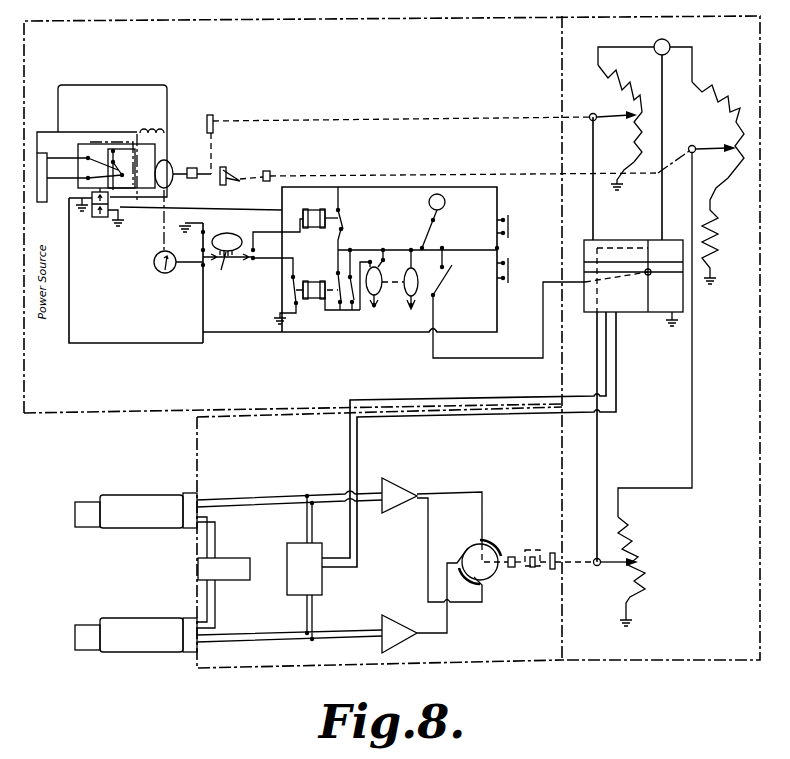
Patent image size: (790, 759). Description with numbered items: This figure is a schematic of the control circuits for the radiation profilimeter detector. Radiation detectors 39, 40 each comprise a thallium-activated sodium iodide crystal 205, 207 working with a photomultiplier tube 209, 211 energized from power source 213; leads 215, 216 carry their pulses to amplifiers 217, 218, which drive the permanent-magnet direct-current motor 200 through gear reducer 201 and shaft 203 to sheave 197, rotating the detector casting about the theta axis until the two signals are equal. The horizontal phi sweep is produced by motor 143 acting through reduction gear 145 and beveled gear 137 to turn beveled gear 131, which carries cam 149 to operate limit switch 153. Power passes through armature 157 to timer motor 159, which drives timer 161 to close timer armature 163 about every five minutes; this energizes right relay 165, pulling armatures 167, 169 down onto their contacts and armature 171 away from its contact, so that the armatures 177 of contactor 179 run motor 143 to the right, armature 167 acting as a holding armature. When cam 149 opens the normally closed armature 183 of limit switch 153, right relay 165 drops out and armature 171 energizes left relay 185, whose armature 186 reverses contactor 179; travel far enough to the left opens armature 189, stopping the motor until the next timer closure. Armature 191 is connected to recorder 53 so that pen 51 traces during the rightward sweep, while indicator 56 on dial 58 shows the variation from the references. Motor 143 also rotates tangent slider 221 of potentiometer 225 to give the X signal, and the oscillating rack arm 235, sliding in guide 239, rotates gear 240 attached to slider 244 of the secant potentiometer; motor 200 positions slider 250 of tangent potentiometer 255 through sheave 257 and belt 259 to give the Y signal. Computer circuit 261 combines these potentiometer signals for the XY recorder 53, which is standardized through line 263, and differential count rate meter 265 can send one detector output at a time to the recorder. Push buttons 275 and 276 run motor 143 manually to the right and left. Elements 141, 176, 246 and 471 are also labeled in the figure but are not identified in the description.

The radiation detector 39 is at (123, 486).
The radiation detector 40 is at (123, 613).
The pen 51 is at (647, 276).
The recorder 53 is at (656, 329).
The indicator 56 is at (154, 268).
The dial 58 is at (162, 273).
The beveled gear 131 is at (224, 186).
The beveled gear 137 is at (222, 168).
The transformer 141 is at (228, 233).
The motor 143 is at (171, 170).
The reduction gear 145 is at (190, 179).
The cam 149 is at (254, 262).
The limit switch 153 is at (204, 266).
The armature 157 is at (428, 228).
The timer motor 159 is at (380, 290).
The timer 161 is at (374, 297).
The timer armature 163 is at (410, 249).
The right relay 165 is at (304, 281).
The right relay armature 167 is at (337, 276).
The right relay armature 169 is at (350, 270).
The armature 171 is at (289, 283).
The rectifier 176 is at (92, 215).
The contactor armatures 177 is at (110, 150).
The contactor 179 is at (137, 150).
The normally-closed armature 183 is at (203, 258).
The left relay 185 is at (320, 209).
The left relay armature 186 is at (341, 210).
The armature 189 is at (257, 250).
The armature 191 is at (438, 300).
The sheave 197 is at (532, 567).
The motor 200 is at (486, 544).
The gear reducer 201 is at (512, 567).
The shaft 203 is at (526, 572).
The thallium-activated sodium iodide crystal 205 is at (86, 528).
The thallium-activated sodium iodide crystal 207 is at (86, 652).
The photomultiplier tube 209 is at (122, 530).
The photomultiplier tube 211 is at (122, 654).
The power source 213 is at (226, 558).
The lead 215 is at (222, 497).
The lead 216 is at (236, 640).
The amplifier 217 is at (398, 482).
The amplifier 218 is at (406, 644).
The tangent slider 221 is at (622, 115).
The tangent potentiometer 225 is at (635, 62).
The arm 235 is at (247, 178).
The guide 239 is at (669, 43).
The gear 240 is at (282, 176).
The slider 244 is at (696, 154).
The secant potentiometer 246 is at (729, 100).
The slider 250 is at (622, 568).
The tangent potentiometer 255 is at (655, 582).
The sheave 257 is at (556, 554).
The belt 259 is at (536, 550).
The computer circuit 261 is at (614, 661).
The line 263 is at (664, 132).
The differential count rate meter 265 is at (322, 586).
The push button 275 is at (512, 270).
The left push button 276 is at (512, 224).
The transformer winding 471 is at (239, 221).